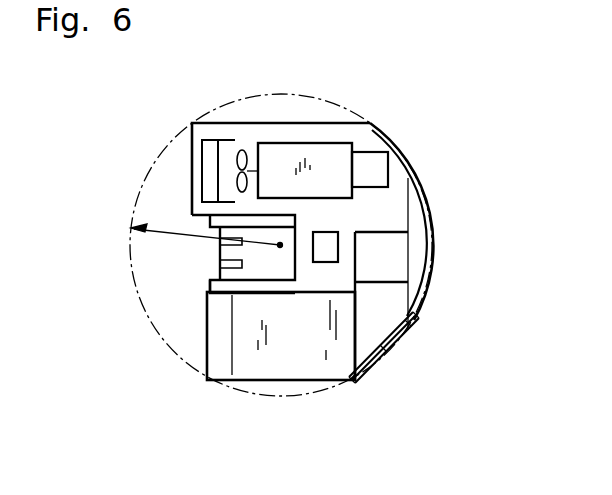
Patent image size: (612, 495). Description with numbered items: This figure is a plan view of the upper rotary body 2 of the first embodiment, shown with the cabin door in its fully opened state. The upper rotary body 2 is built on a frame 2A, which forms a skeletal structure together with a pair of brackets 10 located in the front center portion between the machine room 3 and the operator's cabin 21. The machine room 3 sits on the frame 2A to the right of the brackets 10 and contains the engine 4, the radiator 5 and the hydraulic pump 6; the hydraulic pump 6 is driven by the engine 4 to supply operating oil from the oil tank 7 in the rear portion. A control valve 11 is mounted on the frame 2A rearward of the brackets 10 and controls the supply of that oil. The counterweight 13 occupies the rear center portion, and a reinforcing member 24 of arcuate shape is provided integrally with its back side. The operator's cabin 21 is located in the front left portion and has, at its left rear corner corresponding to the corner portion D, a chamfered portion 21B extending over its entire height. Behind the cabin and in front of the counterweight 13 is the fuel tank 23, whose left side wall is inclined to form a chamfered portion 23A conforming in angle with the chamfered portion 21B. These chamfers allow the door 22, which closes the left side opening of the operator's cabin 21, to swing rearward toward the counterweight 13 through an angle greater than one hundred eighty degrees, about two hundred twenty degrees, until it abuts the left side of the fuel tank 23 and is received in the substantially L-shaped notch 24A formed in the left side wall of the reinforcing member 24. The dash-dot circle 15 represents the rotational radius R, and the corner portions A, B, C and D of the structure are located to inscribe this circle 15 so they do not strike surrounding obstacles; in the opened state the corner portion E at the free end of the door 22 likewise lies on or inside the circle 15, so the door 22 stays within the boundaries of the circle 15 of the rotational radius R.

The upper rotary body 2 is at (333, 217).
The frame 2A is at (390, 196).
The machine room 3 is at (346, 123).
The engine 4 is at (300, 160).
The radiator 5 is at (210, 160).
The hydraulic pump 6 is at (382, 160).
The oil tank 7 is at (397, 247).
The brackets 10 is at (222, 222).
The control valve 11 is at (338, 250).
The counterweight 13 is at (413, 232).
The circle 15 is at (130, 265).
The operator's cabin 21 is at (218, 355).
The chamfered portion 21B is at (352, 383).
The door 22 is at (375, 355).
The fuel tank 23 is at (398, 306).
The chamfered portion 23A is at (392, 352).
The reinforcing member 24 is at (413, 170).
The notch 24A is at (405, 335).
The corner portion A is at (370, 122).
The corner portion B is at (192, 128).
The corner portion C is at (208, 380).
The corner portion D is at (355, 381).
The corner portion E is at (402, 337).
The rotational radius R is at (207, 230).